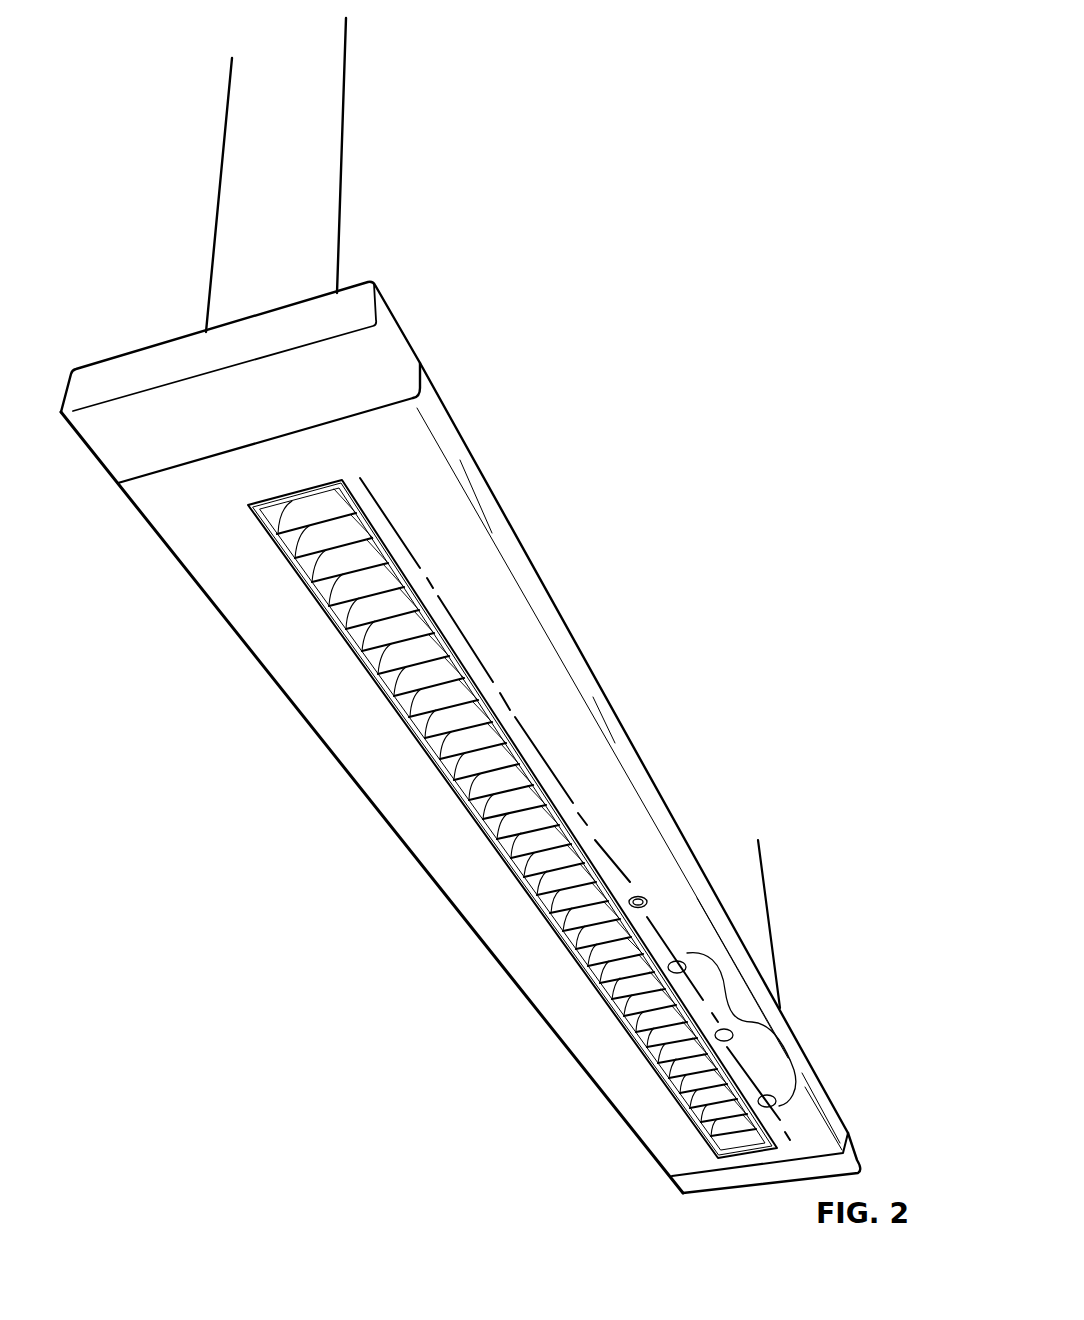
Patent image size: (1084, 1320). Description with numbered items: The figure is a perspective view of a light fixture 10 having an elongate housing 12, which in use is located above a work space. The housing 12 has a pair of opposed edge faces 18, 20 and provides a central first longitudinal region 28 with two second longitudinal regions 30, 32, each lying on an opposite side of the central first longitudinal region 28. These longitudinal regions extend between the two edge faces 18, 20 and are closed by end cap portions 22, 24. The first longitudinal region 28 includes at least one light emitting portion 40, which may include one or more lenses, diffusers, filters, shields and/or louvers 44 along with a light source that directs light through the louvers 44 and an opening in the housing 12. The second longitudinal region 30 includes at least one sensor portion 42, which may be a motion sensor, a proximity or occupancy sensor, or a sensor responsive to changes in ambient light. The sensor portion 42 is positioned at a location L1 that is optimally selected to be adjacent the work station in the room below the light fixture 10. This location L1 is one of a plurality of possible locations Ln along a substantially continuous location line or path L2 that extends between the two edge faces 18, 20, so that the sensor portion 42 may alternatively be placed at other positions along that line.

The light fixture 10 is at (467, 778).
The elongate housing 12 is at (588, 662).
The edge face 18 is at (420, 360).
The edge face 20 is at (848, 1134).
The end cap portion 22 is at (408, 338).
The end cap portion 24 is at (857, 1154).
The central first longitudinal region 28 is at (314, 459).
The second longitudinal region 30 is at (462, 553).
The second longitudinal region 32 is at (278, 650).
The light emitting portion 40 is at (419, 793).
The sensor portion 42 is at (663, 887).
The louvers 44 is at (530, 888).
The location L1 is at (653, 903).
The location line L2 is at (603, 852).
The possible locations Ln is at (740, 1025).